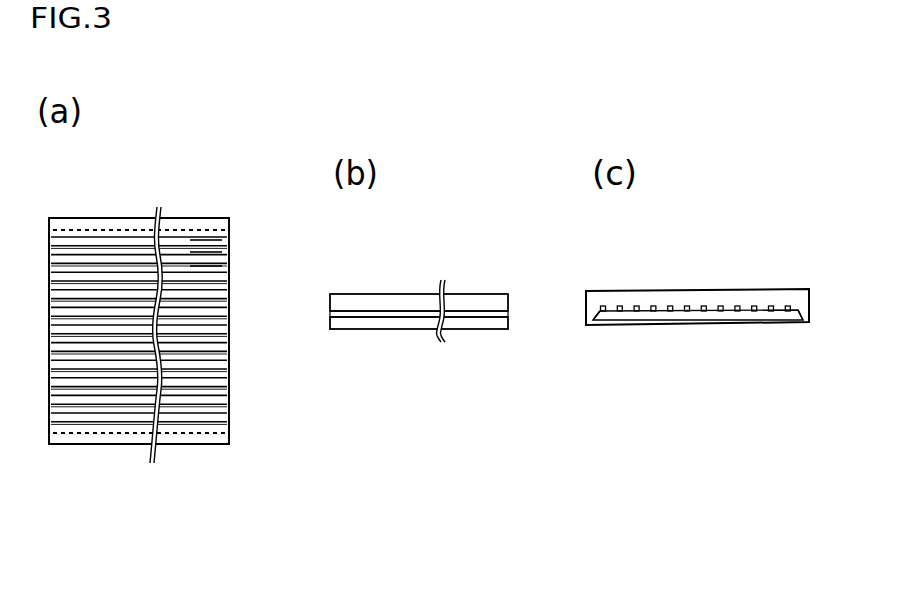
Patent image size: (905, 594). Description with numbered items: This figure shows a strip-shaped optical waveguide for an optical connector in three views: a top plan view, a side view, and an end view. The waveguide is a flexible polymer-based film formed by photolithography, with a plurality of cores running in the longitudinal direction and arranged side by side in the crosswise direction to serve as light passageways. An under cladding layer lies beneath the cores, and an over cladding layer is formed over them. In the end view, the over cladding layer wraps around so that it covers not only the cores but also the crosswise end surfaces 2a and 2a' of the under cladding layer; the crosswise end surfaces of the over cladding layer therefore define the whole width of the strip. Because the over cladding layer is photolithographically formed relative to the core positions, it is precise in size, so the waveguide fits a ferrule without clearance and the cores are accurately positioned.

The crosswise end surface of under cladding layer 2a is at (590, 346).
The crosswise end surface of under cladding layer 2a' is at (805, 346).